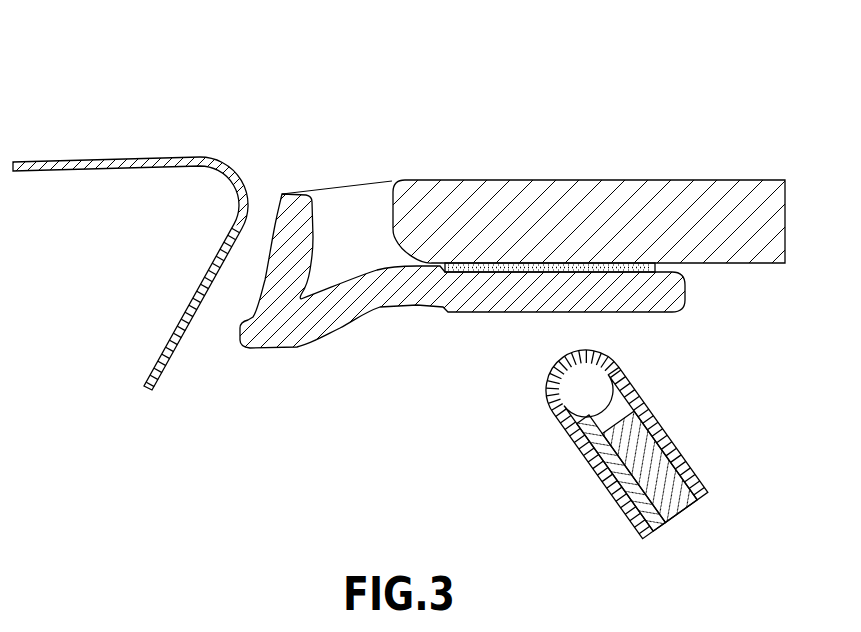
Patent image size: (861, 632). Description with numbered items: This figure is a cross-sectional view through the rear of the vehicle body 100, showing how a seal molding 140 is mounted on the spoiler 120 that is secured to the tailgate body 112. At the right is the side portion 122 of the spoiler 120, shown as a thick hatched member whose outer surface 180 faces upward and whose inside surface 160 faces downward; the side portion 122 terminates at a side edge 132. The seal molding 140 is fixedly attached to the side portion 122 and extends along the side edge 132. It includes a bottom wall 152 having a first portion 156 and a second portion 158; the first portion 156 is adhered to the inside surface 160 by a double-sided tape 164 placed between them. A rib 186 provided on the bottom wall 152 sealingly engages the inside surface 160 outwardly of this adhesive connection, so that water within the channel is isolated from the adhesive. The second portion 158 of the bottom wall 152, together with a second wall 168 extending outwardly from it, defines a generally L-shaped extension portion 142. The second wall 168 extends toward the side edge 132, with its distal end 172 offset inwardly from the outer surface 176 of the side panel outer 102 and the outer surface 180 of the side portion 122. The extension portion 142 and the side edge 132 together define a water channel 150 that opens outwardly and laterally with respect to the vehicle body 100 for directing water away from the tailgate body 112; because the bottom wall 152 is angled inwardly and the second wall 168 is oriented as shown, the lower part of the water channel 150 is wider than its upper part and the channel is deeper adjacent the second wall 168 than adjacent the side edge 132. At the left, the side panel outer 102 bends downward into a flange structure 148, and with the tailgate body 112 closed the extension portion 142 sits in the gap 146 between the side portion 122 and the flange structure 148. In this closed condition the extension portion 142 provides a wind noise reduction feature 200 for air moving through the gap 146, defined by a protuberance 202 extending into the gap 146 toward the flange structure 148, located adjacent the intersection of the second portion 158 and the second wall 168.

The vehicle body 100 is at (101, 82).
The side panel outer 102 is at (62, 160).
The tailgate body 112 is at (597, 468).
The spoiler 120 is at (683, 174).
The side portion 122 is at (577, 178).
The side edge 132 is at (377, 188).
The seal molding 140 is at (358, 352).
The extension portion 142 is at (247, 372).
The gap 146 is at (240, 266).
The flange structure 148 is at (188, 313).
The water channel 150 is at (346, 200).
The bottom wall 152 is at (518, 312).
The first portion 156 is at (637, 300).
The second portion 158 is at (312, 346).
The inside surface 160 is at (725, 265).
The double-sided tape 164 is at (573, 273).
The second wall 168 is at (286, 232).
The distal end 172 is at (277, 192).
The outer surface 176 is at (133, 157).
The outer surface 180 is at (507, 180).
The rib 186 is at (432, 263).
The wind noise reduction feature 200 is at (221, 362).
The protuberance 202 is at (240, 333).